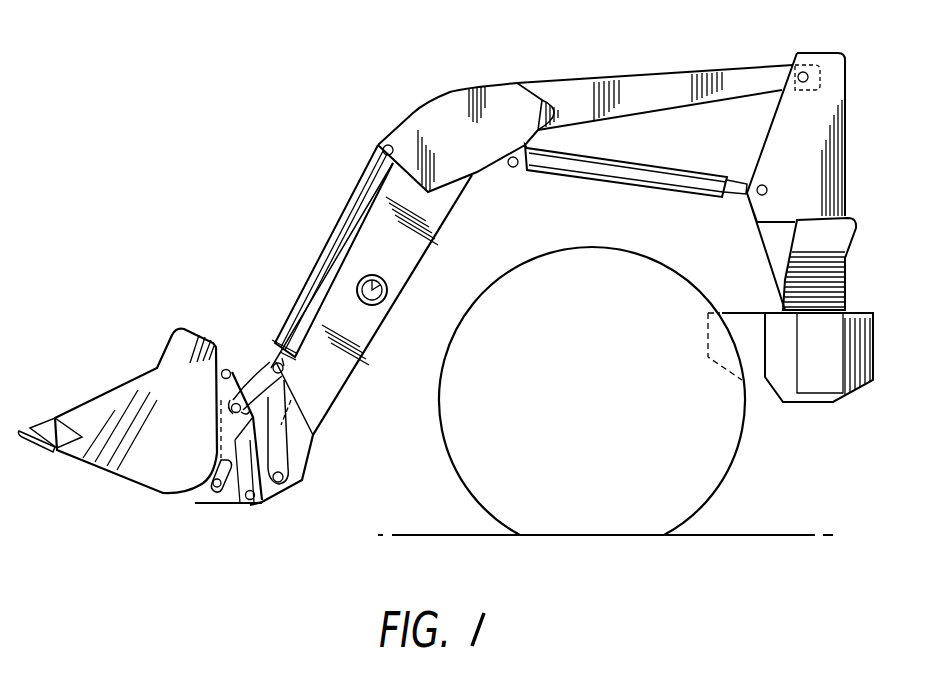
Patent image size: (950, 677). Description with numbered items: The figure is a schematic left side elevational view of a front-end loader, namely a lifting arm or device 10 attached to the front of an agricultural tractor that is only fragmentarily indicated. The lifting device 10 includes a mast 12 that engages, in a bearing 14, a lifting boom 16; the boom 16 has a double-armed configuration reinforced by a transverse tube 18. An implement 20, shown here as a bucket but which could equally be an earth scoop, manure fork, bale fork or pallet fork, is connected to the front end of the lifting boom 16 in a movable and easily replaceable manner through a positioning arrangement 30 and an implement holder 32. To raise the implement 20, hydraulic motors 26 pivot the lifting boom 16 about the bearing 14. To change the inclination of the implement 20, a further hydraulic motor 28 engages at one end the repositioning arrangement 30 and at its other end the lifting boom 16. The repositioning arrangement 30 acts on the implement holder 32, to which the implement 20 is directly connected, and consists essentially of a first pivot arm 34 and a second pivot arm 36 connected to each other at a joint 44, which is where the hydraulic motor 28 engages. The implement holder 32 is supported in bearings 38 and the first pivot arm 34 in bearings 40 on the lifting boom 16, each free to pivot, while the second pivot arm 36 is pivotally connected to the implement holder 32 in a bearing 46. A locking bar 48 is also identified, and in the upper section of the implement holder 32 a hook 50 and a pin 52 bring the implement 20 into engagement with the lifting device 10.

The lifting arm or device 10 is at (401, 95).
The mast 12 is at (848, 88).
The bearing 14 is at (810, 70).
The lifting boom 16 is at (587, 82).
The transverse tube 18 is at (374, 281).
The implement 20 is at (123, 382).
The hydraulic motors 26 is at (610, 187).
The hydraulic motor 28 is at (340, 225).
The positioning arrangement 30 is at (269, 325).
The implement holder 32 is at (237, 506).
The first pivot arm 34 is at (305, 437).
The second pivot arm 36 is at (252, 370).
The bearings 38 is at (255, 503).
The bearings 40 is at (290, 478).
The joint 44 is at (284, 368).
The bearing 46 is at (220, 423).
The locking bar 48 is at (218, 509).
The hook 50 is at (231, 406).
The pin 52 is at (226, 369).